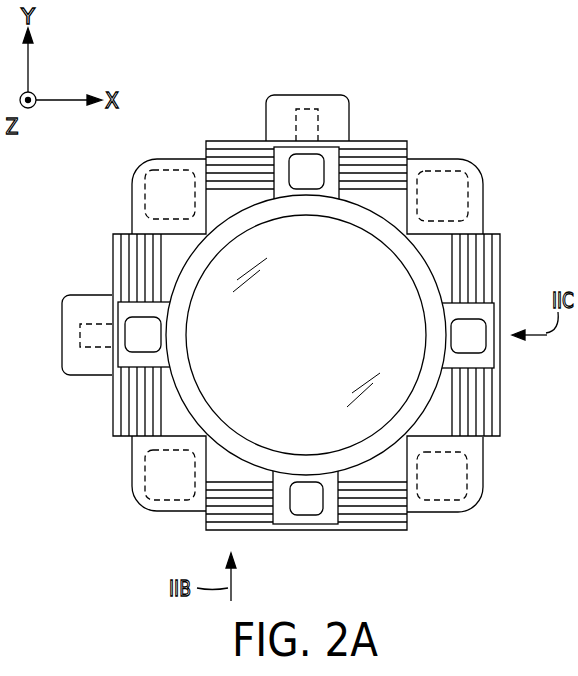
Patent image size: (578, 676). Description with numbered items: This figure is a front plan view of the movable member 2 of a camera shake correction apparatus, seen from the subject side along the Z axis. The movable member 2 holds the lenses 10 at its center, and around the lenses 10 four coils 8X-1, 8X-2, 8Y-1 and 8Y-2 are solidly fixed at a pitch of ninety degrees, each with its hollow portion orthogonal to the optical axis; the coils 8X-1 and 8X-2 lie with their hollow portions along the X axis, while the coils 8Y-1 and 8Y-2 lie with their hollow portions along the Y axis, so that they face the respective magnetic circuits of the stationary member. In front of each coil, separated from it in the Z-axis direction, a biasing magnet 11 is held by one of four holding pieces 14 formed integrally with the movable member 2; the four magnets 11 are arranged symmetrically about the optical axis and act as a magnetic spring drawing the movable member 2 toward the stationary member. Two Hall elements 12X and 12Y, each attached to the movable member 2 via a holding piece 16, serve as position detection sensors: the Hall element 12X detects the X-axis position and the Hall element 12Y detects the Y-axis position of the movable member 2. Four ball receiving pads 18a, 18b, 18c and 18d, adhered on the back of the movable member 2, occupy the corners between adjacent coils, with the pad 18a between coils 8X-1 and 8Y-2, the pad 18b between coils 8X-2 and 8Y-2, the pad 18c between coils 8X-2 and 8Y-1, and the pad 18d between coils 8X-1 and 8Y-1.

The movable member 2 is at (437, 158).
The coil 8X-1 is at (111, 418).
The coil 8X-2 is at (501, 420).
The coil 8Y-1 is at (390, 531).
The coil 8Y-2 is at (225, 141).
The lenses 10 is at (378, 279).
The magnet 11 is at (302, 166).
The Hall element 12X is at (80, 333).
The Hall element 12Y is at (307, 109).
The holding piece 14 is at (333, 167).
The holding piece 16 is at (333, 95).
The ball receiving pad 18a is at (173, 168).
The ball receiving pad 18b is at (455, 168).
The ball receiving pad 18c is at (468, 478).
The ball receiving pad 18d is at (143, 472).